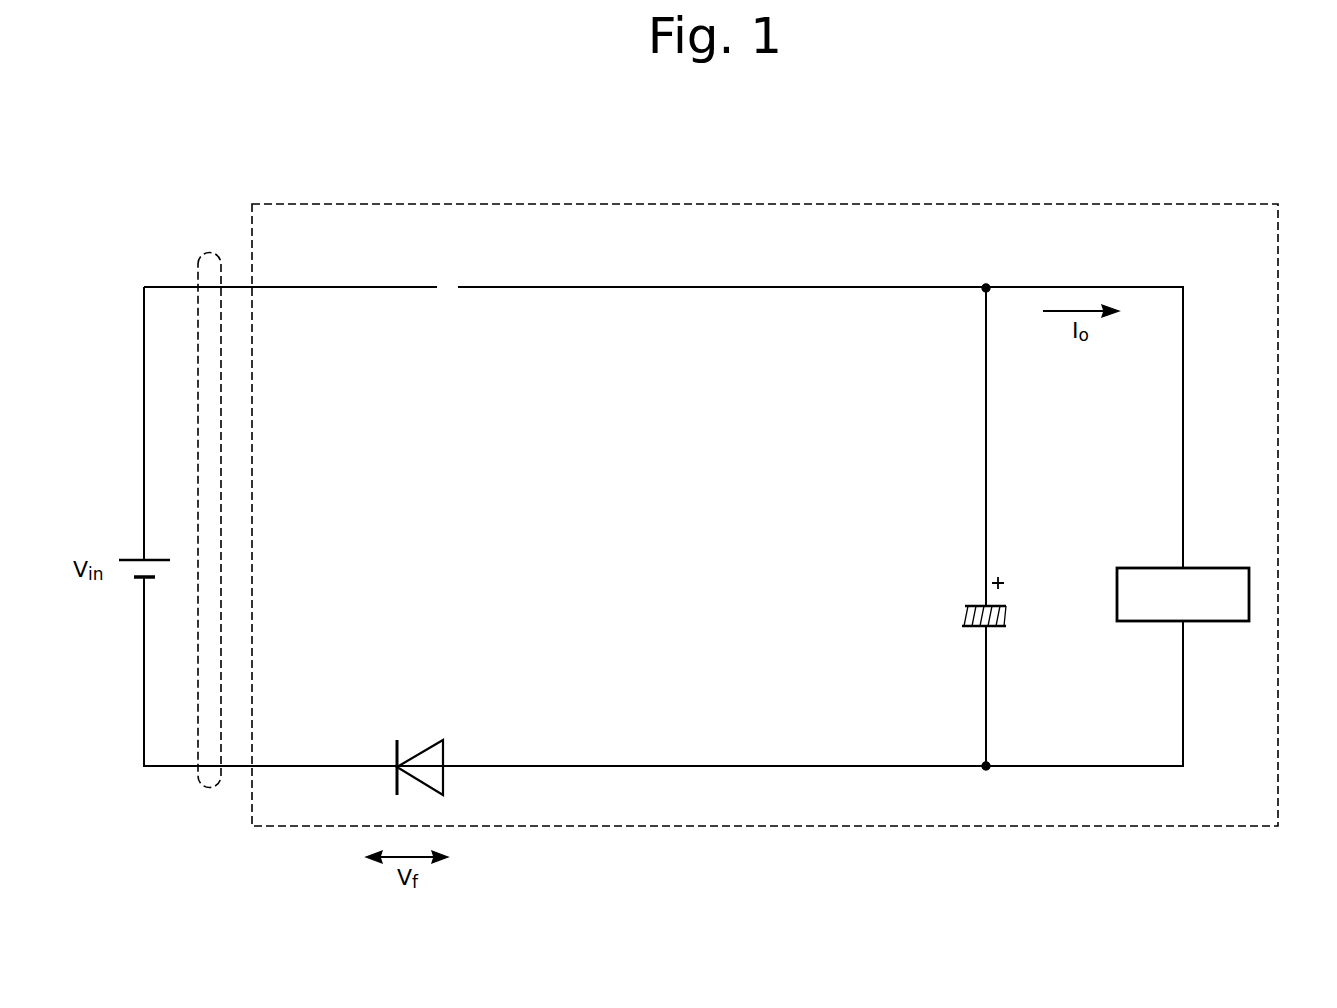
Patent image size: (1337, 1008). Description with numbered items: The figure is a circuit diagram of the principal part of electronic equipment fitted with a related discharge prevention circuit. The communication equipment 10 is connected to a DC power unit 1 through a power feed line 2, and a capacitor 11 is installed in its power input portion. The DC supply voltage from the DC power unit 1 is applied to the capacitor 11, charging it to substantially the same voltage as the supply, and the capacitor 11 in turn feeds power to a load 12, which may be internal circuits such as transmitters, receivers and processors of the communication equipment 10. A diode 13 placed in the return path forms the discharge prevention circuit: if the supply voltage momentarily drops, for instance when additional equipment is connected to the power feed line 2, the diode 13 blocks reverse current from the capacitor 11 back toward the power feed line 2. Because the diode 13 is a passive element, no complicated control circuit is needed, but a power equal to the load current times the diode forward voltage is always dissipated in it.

The DC power unit 1 is at (132, 558).
The power feed line 2 is at (214, 252).
The communication equipment 10 is at (740, 204).
The capacitor 11 is at (962, 616).
The load 12 is at (1226, 568).
The diode 13 is at (422, 745).